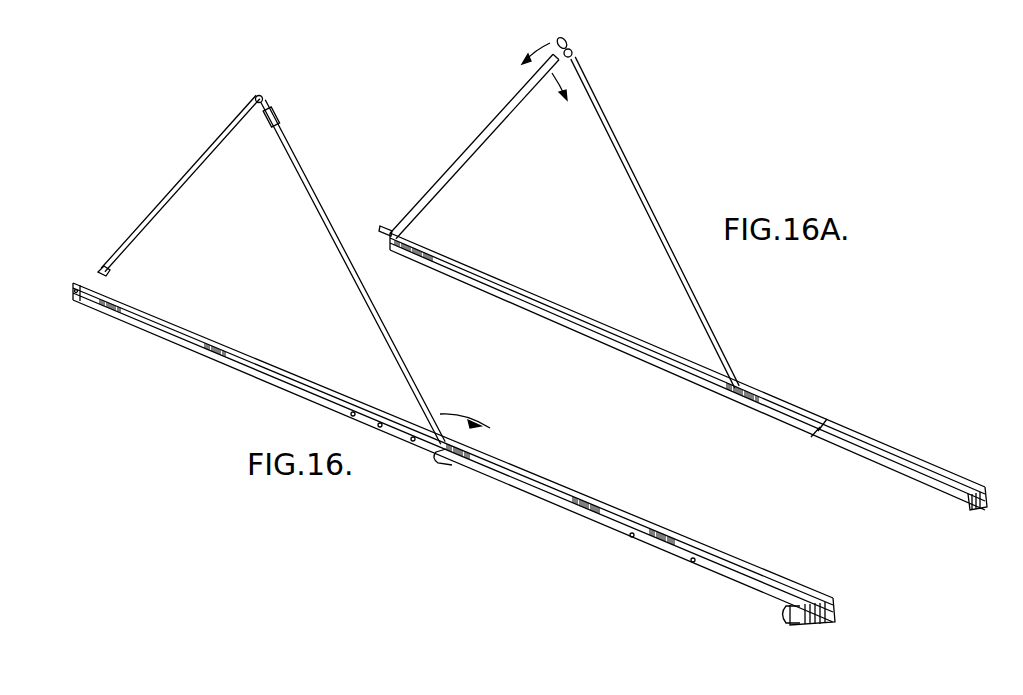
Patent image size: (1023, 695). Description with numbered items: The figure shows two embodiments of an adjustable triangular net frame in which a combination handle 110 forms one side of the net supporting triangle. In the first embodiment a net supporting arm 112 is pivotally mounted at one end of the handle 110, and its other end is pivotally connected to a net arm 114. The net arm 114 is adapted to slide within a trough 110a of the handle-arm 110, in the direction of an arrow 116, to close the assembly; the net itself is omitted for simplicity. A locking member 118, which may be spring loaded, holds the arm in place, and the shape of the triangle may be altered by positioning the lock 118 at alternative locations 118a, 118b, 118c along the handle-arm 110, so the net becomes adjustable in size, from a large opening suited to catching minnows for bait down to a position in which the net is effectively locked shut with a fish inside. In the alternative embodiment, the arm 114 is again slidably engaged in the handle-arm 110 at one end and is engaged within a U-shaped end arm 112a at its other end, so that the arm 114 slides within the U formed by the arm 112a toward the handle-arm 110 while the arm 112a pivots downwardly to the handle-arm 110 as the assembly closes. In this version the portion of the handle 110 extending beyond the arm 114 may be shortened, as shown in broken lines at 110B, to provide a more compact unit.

In FIG. 16, the combination handle 110 is at (270, 376).
In FIG. 16A, the combination handle 110 is at (833, 423).
In FIG. 16, the trough 110a is at (620, 513).
In FIG. 16A, the shortened handle portion 110B is at (823, 418).
In FIG. 16, the net supporting arm 112 is at (193, 168).
In FIG. 16A, the U-shaped end arm 112a is at (483, 133).
In FIG. 16, the net arm 114 is at (305, 180).
In FIG. 16A, the net arm 114 is at (647, 210).
In FIG. 16, the arrow 116 is at (485, 428).
In FIG. 16, the locking member 118 is at (445, 466).
In FIG. 16, the alternative lock location 118a is at (353, 414).
In FIG. 16, the alternative lock location 118b is at (632, 536).
In FIG. 16, the alternative lock location 118c is at (693, 564).